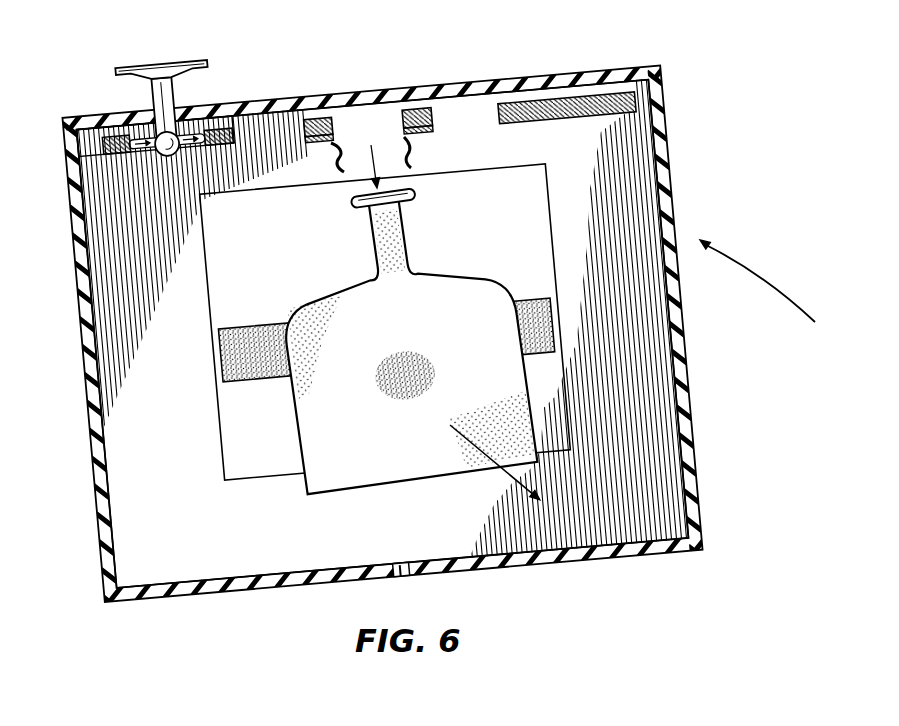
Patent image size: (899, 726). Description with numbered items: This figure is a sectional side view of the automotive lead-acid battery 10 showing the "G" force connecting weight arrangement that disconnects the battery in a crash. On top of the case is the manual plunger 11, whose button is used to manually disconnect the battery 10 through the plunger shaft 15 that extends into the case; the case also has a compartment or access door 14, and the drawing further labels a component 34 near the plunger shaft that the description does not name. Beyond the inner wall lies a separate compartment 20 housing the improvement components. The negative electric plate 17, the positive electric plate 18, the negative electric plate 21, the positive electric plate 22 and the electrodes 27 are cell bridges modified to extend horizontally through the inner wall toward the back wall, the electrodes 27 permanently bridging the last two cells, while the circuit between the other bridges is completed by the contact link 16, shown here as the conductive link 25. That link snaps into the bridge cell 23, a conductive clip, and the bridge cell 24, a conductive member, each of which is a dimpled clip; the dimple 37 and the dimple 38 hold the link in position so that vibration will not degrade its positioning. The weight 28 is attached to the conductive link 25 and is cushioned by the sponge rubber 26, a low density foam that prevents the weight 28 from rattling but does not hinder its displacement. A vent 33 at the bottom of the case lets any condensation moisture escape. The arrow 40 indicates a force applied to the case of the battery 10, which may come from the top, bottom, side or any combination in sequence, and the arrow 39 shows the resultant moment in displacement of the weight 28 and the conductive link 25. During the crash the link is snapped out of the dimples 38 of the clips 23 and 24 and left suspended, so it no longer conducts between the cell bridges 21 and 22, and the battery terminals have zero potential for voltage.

The battery 10 is at (639, 42).
The manual plunger 11 is at (140, 53).
The access door 14 is at (242, 413).
The plunger shaft 15 is at (175, 92).
The contact link 16 is at (200, 152).
The negative electric plate 17 is at (72, 157).
The positive electric plate 18 is at (246, 102).
The compartment 20 is at (171, 524).
The negative electric plate 21 is at (323, 119).
The positive electric plate 22 is at (418, 108).
The bridge cell 23 is at (333, 168).
The bridge cell 24 is at (428, 145).
The contact link 25 is at (362, 222).
The sponge rubber 26 is at (265, 332).
The electrodes 27 is at (543, 100).
The weight 28 is at (452, 299).
The vent 33 is at (398, 566).
The valve housing 34 is at (154, 108).
The dimple 37 is at (68, 132).
The dimple 38 is at (393, 153).
The arrow 39 is at (373, 162).
The arrow 40 is at (775, 290).